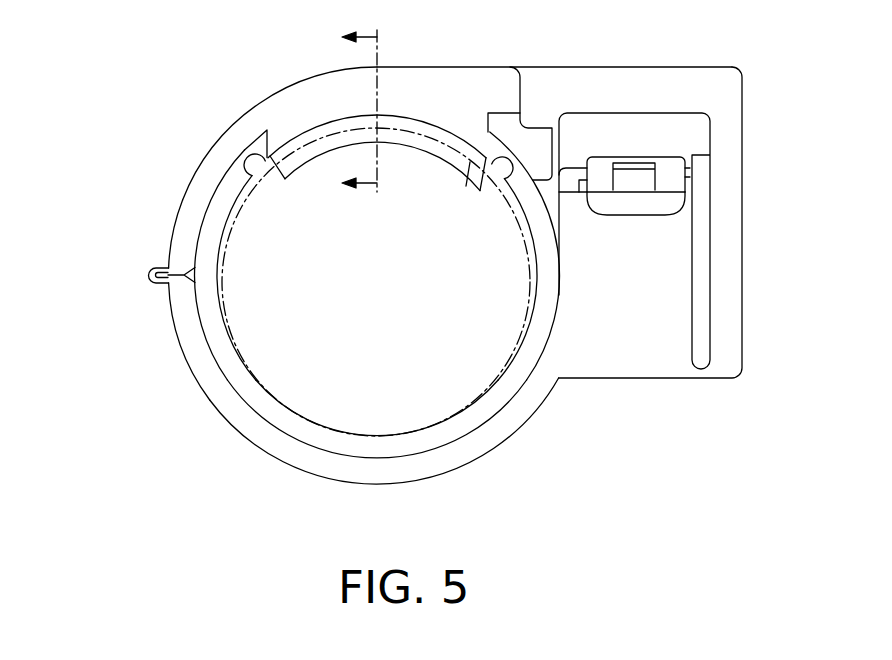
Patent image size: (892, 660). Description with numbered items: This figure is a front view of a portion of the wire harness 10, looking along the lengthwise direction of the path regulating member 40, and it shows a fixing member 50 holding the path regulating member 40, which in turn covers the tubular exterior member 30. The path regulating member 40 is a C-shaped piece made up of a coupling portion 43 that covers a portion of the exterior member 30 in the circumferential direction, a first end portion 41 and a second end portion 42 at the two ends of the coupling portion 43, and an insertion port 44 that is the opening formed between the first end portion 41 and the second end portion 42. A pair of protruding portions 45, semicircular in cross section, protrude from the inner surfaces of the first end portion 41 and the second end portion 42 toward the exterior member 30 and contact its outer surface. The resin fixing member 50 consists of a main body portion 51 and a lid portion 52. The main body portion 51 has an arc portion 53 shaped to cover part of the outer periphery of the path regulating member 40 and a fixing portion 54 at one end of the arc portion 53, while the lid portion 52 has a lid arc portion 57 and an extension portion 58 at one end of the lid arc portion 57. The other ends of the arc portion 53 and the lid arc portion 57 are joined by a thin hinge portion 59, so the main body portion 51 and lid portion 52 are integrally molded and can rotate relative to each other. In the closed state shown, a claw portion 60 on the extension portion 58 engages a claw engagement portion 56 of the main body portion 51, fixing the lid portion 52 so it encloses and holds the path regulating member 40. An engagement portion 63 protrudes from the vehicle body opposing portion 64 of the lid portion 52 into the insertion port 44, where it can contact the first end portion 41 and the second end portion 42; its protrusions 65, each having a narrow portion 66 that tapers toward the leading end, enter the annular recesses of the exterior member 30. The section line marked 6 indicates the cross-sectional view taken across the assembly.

The wire harness 10 is at (733, 62).
The exterior member 30 is at (402, 128).
The path regulating member 40 is at (494, 430).
The first end portion 41 is at (525, 188).
The second end portion 42 is at (238, 192).
The coupling portion 43 is at (500, 399).
The insertion port 44 is at (284, 160).
The protruding portions 45 is at (492, 181).
The fixing member 50 is at (467, 66).
The main body portion 51 is at (190, 372).
The lid portion 52 is at (203, 157).
The arc portion 53 is at (273, 454).
The fixing portion 54 is at (653, 360).
The claw engagement portion 56 is at (638, 147).
The lid arc portion 57 is at (182, 210).
The extension portion 58 is at (626, 80).
The hinge portion 59 is at (150, 276).
The claw portion 60 is at (625, 168).
The engagement portion 63 is at (267, 132).
The vehicle body opposing portion 64 is at (408, 84).
The protrusions 65 is at (400, 144).
The narrow portion 66 is at (463, 166).
The section line 6- 6 is at (359, 110).